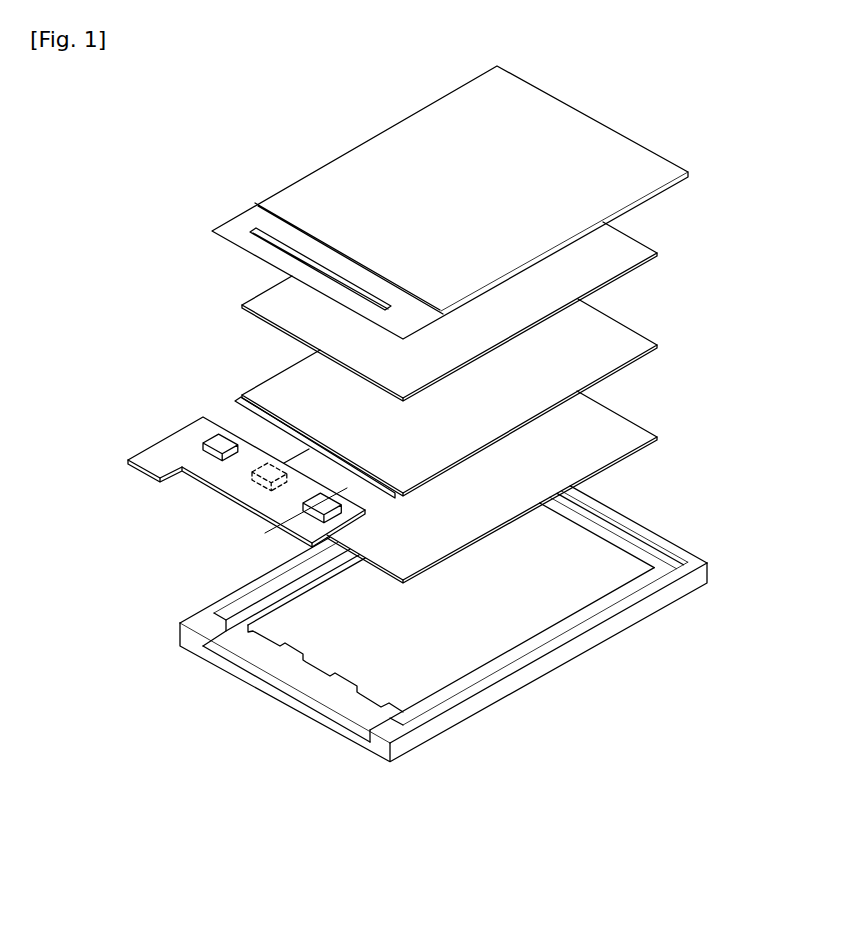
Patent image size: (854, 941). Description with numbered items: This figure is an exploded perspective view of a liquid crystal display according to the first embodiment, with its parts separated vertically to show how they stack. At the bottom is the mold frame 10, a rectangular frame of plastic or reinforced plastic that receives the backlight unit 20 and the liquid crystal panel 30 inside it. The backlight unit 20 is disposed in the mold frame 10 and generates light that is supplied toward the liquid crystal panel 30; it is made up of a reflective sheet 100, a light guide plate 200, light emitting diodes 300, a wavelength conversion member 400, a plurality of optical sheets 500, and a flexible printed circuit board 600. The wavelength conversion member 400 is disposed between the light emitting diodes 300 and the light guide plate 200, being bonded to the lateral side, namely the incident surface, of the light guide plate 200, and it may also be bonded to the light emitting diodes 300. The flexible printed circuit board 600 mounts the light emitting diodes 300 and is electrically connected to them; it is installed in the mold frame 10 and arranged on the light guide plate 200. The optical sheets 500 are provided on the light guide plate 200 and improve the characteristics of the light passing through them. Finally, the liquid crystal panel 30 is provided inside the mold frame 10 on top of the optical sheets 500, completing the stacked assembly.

The mold frame 10 is at (201, 607).
The backlight unit 20 is at (72, 355).
The liquid crystal panel 30 is at (289, 197).
The reflective sheet 100 is at (392, 555).
The light guide plate 200 is at (203, 417).
The light emitting diodes 300 is at (210, 462).
The wavelength conversion member 400 is at (242, 398).
The optical sheets 500 is at (303, 323).
The flexible printed circuit board 600 is at (194, 432).